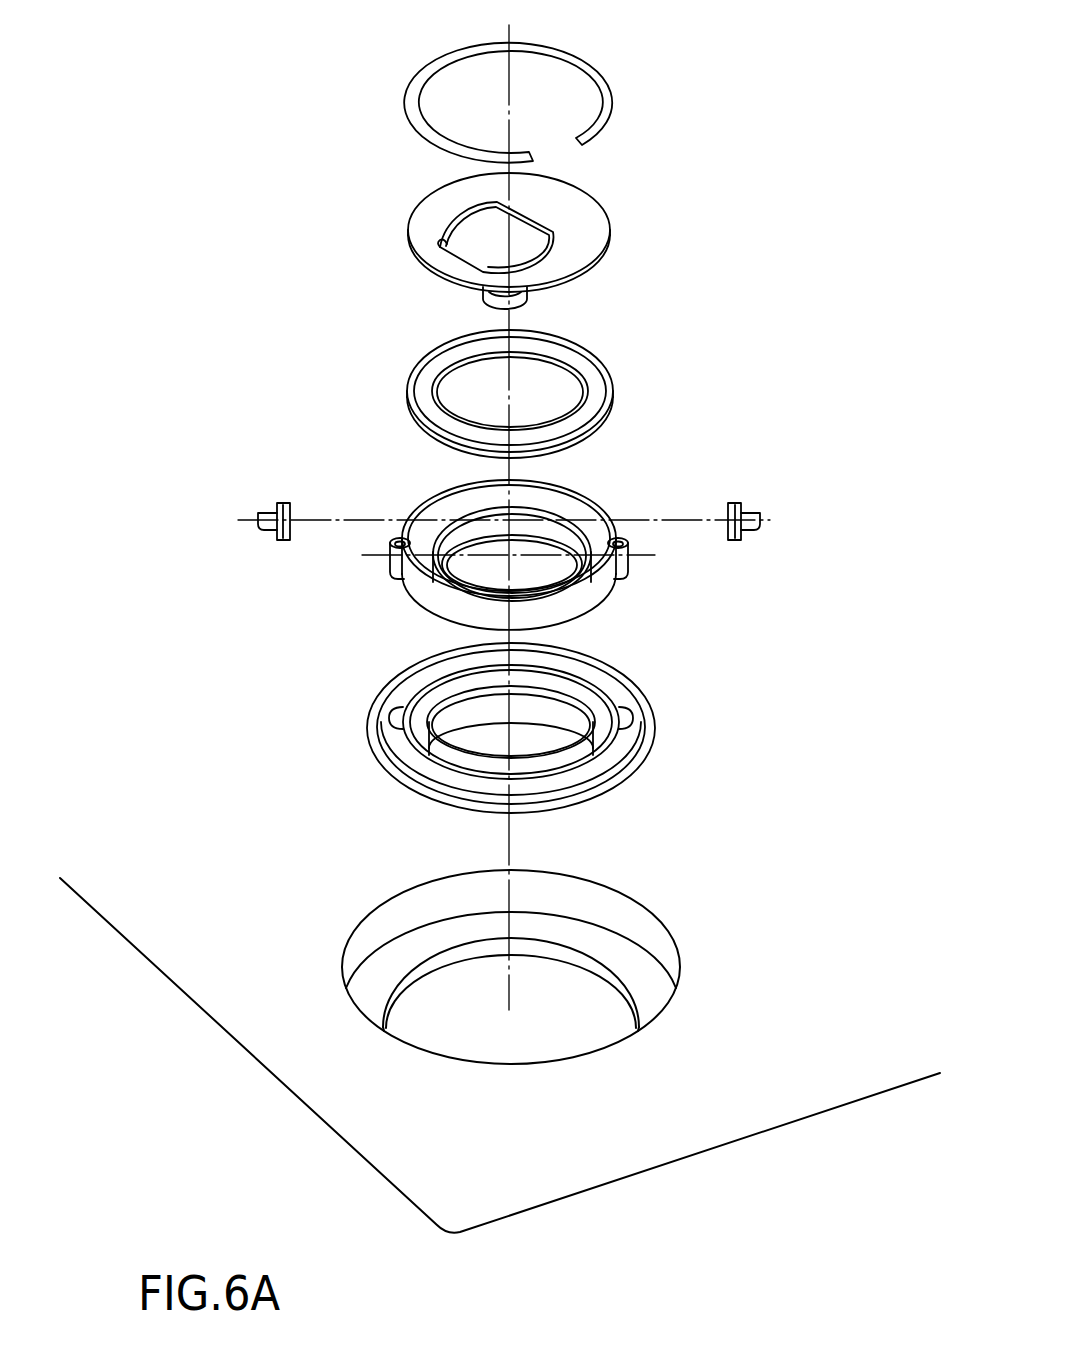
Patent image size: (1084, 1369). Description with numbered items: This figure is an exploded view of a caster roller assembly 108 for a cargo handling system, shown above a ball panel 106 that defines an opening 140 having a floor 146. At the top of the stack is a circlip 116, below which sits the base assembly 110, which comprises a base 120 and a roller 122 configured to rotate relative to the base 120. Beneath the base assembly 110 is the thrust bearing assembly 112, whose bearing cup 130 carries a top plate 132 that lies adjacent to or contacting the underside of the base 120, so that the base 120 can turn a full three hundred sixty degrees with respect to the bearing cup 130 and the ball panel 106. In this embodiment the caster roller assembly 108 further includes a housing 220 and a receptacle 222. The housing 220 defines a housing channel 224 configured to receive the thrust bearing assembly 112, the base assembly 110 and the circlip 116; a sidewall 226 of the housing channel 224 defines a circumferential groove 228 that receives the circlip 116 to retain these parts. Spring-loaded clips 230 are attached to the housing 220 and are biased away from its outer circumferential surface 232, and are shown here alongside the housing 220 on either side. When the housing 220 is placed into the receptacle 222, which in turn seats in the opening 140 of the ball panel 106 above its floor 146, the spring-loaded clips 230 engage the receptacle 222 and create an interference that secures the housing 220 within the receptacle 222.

The ball panel 106 is at (229, 932).
The caster roller assembly 108 is at (737, 102).
The base assembly 110 is at (494, 243).
The thrust bearing assembly 112 is at (494, 376).
The circlip 116 is at (410, 92).
The base 120 is at (580, 220).
The roller 122 is at (478, 238).
The bearing cup 130 is at (605, 413).
The top plate 132 is at (573, 357).
The opening 140 is at (528, 938).
The floor 146 is at (385, 972).
The housing 220 is at (498, 529).
The receptacle 222 is at (368, 721).
The housing channel 224 is at (448, 528).
The sidewall 226 is at (548, 503).
The circumferential groove 228 is at (570, 493).
The spring-loaded clips 230 is at (283, 507).
The outer circumferential surface 232 is at (518, 631).